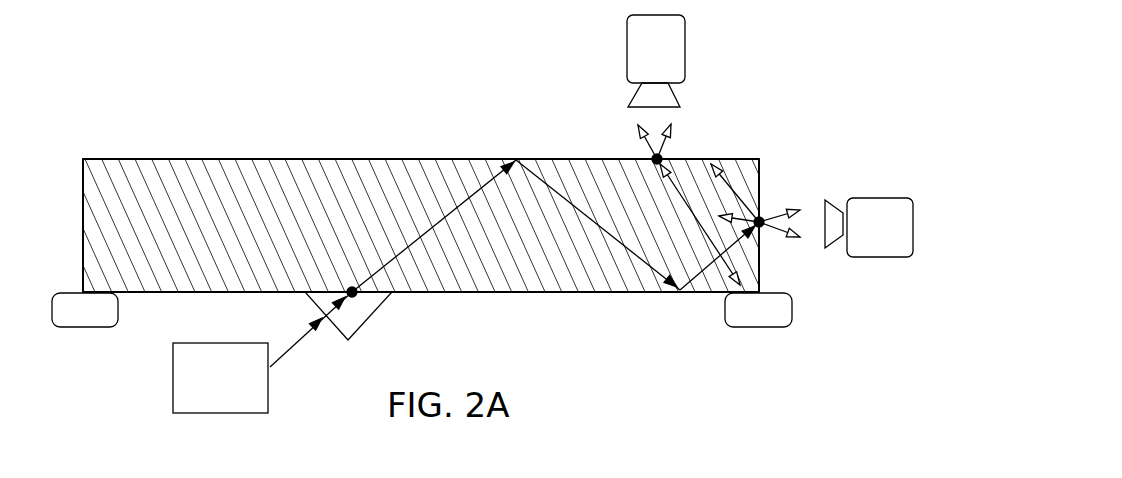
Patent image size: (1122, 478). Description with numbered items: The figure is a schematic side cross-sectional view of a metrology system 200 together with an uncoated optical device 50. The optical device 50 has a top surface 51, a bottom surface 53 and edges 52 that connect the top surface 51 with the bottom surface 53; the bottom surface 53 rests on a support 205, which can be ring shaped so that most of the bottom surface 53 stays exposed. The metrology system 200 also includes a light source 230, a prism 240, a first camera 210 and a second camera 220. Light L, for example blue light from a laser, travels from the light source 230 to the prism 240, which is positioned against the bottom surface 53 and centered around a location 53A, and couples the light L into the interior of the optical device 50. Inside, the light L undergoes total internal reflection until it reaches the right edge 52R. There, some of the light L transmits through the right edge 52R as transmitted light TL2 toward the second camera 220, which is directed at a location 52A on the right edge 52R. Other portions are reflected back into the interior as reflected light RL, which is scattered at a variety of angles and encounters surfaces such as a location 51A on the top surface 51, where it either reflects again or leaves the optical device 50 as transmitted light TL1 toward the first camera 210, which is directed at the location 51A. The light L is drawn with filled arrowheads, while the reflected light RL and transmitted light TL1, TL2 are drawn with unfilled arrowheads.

The metrology system 200 is at (787, 56).
The optical device 50 is at (183, 127).
The top surface 51 is at (305, 158).
The edges 52 is at (83, 208).
The bottom surface 53 is at (502, 293).
The right edge 52R is at (762, 175).
The location 51A is at (663, 155).
The location 52A is at (767, 230).
The location 53A is at (352, 292).
The support 205 is at (85, 328).
The first camera 210 is at (643, 58).
The second camera 220 is at (864, 236).
The light source 230 is at (173, 388).
The prism 240 is at (353, 315).
The light L is at (288, 347).
The reflected light RL is at (670, 230).
The transmitted light TL1 is at (648, 150).
The transmitted light TL2 is at (770, 213).